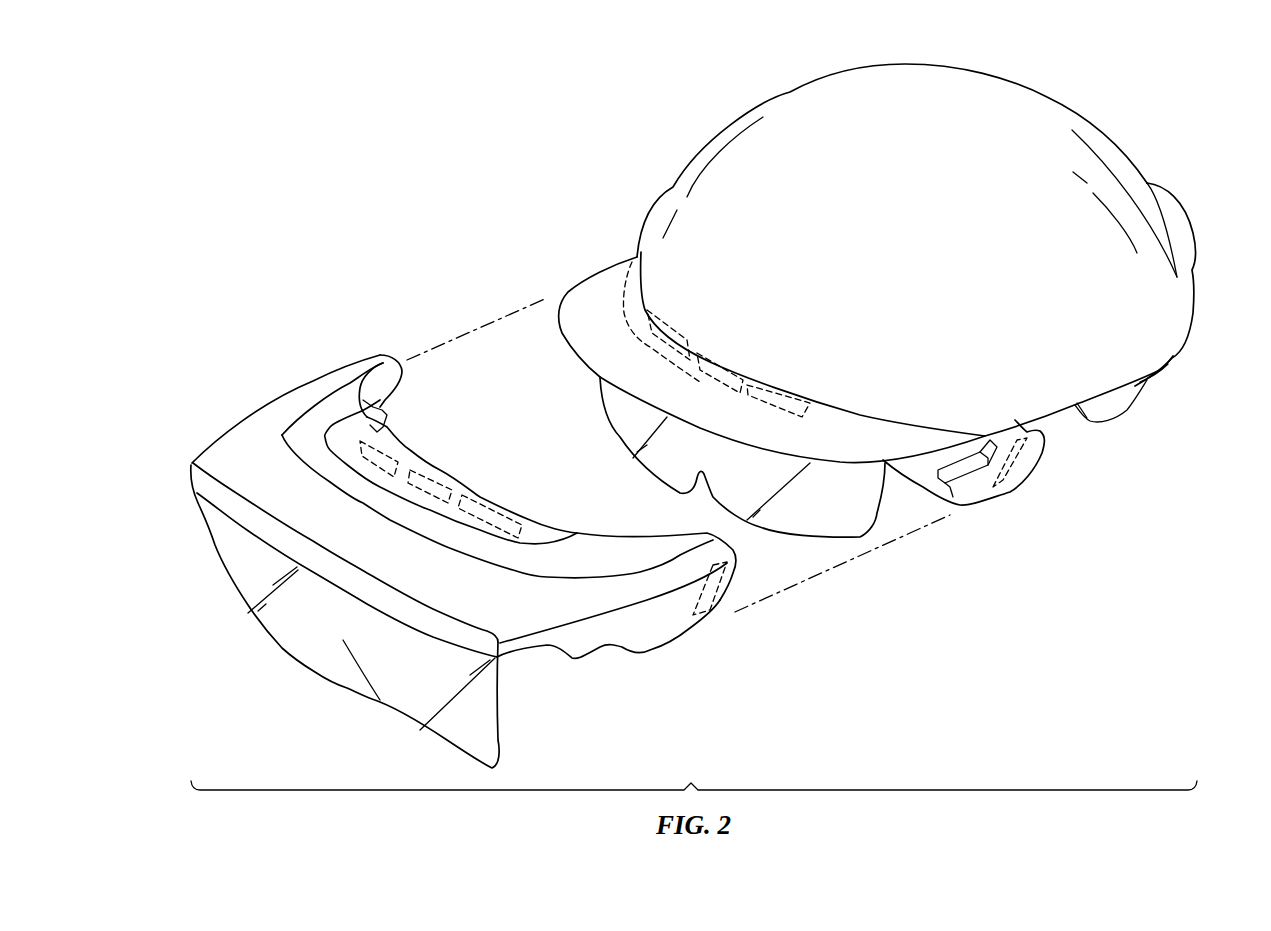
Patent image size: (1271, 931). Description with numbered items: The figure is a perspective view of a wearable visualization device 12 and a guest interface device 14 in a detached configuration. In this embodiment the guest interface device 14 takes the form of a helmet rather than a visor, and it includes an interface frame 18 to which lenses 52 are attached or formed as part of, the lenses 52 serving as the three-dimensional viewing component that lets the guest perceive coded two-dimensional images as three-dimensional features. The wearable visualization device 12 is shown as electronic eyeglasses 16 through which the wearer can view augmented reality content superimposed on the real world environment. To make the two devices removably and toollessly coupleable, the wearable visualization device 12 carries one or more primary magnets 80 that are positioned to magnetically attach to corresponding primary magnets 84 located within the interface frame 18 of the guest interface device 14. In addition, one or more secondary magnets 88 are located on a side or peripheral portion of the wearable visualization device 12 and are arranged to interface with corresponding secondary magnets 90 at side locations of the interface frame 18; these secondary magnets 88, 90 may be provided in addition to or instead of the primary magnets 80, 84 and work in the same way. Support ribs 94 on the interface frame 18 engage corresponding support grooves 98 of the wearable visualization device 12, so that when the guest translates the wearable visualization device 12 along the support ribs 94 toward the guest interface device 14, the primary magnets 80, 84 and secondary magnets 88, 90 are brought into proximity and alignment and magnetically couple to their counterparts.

The wearable visualization device 12 is at (217, 412).
The guest interface device 14 is at (1153, 96).
The electronic eyeglasses 16 is at (348, 693).
The interface frame 18 is at (922, 488).
The lenses 52 is at (785, 537).
The primary magnets 80 is at (410, 452).
The primary magnets 84 is at (975, 435).
The secondary magnets 88 is at (720, 577).
The secondary magnets 90 is at (1017, 463).
The support ribs 94 is at (972, 490).
The support grooves 98 is at (385, 412).